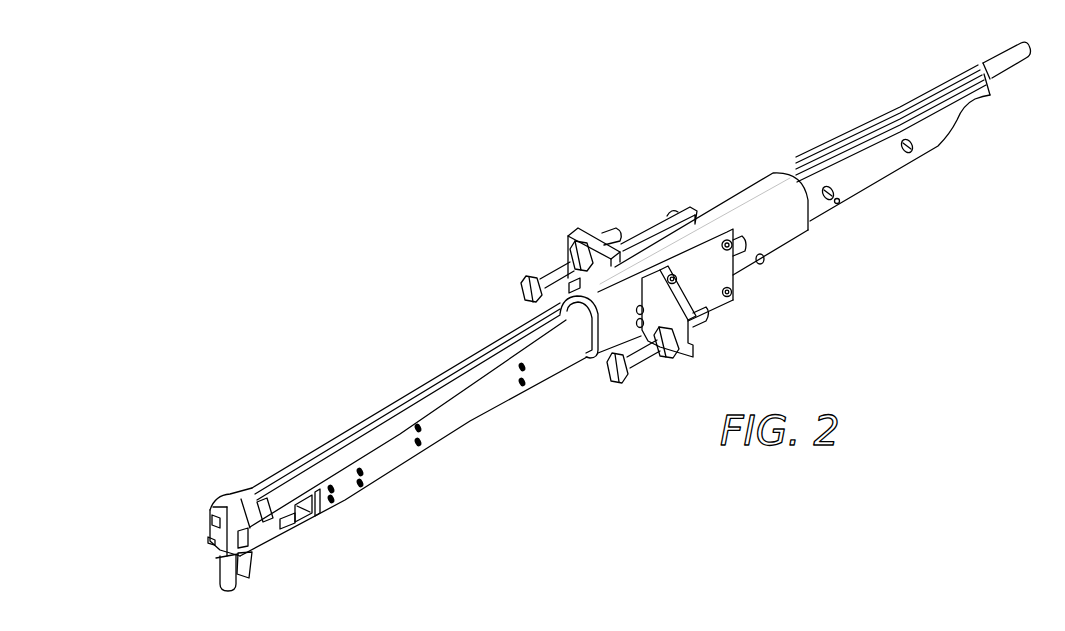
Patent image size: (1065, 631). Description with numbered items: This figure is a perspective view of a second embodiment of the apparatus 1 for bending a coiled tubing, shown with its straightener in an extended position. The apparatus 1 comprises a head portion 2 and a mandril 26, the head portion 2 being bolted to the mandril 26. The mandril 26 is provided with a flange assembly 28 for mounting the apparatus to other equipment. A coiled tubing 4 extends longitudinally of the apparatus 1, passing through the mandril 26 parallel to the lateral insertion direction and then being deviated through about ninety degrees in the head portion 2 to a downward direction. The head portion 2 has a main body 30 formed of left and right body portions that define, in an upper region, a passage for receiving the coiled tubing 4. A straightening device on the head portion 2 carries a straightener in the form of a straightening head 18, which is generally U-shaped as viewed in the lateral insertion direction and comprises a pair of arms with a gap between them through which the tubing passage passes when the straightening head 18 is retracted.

The apparatus 1 is at (606, 318).
The head portion 2 is at (256, 482).
The coiled tubing 4 is at (220, 577).
The straightening head 18 is at (254, 566).
The mandril 26 is at (412, 394).
The flange assembly 28 is at (602, 232).
The main body 30 is at (289, 490).